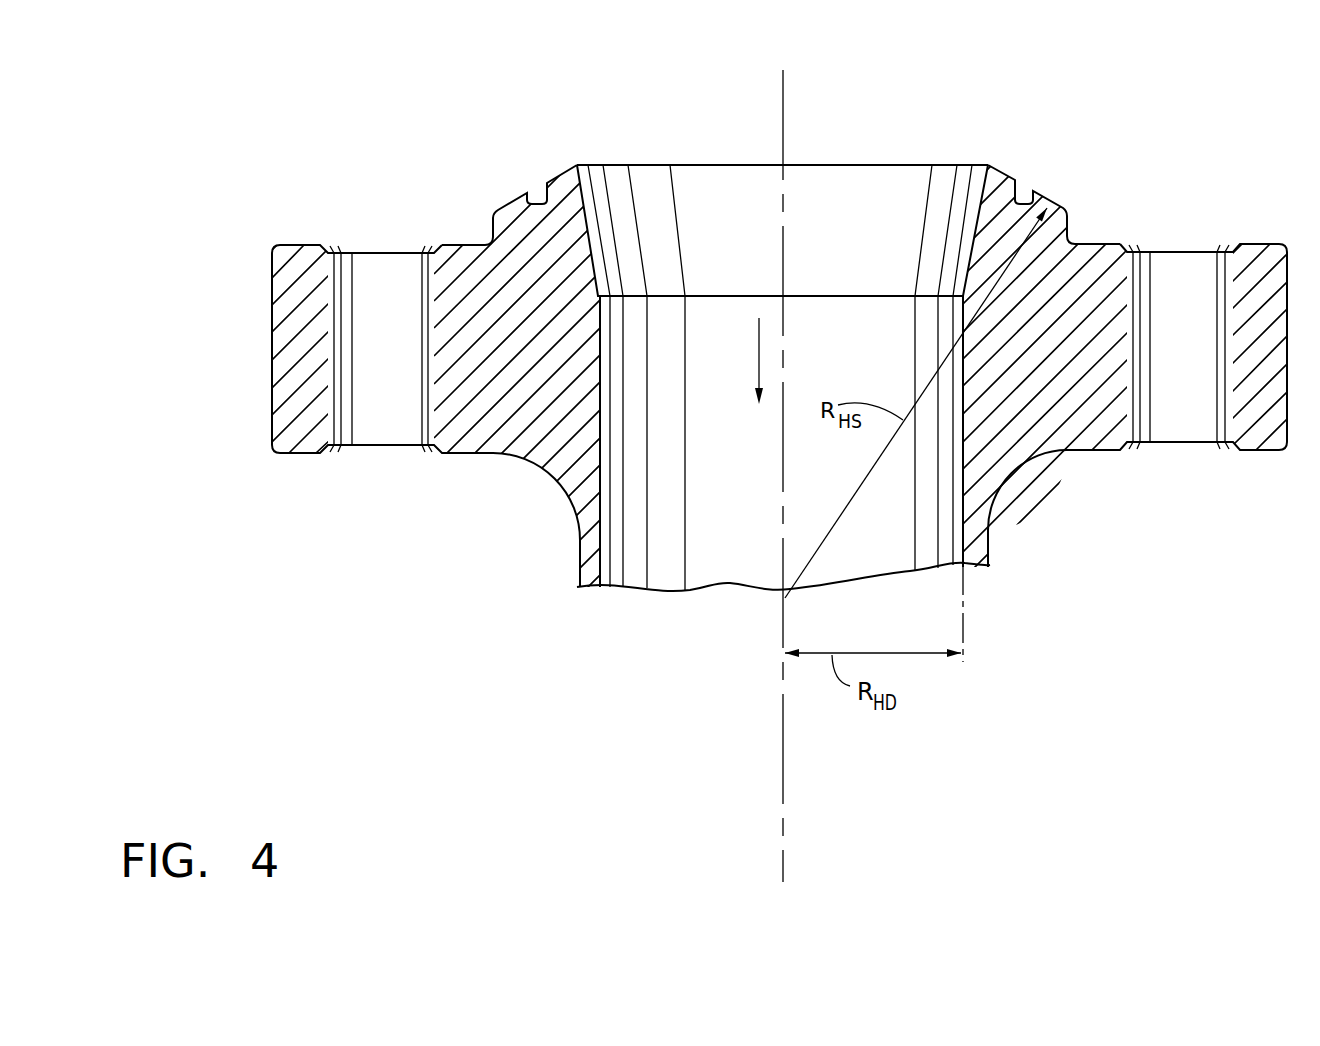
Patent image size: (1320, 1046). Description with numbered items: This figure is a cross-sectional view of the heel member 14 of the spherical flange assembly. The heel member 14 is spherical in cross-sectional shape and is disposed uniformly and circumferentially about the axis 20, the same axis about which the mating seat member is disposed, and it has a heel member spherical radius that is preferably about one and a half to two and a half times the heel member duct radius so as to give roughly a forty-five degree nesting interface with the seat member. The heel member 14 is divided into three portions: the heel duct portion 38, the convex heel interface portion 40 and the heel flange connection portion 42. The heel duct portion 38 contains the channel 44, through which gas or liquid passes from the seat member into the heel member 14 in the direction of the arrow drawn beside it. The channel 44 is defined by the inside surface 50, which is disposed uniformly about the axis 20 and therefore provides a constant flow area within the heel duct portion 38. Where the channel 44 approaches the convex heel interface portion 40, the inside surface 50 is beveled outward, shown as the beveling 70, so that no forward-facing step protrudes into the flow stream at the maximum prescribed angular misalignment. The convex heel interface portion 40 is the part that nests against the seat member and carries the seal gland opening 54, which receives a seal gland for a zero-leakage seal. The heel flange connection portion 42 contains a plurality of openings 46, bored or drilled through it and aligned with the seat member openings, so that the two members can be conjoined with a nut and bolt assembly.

The heel member 14 is at (1024, 488).
The axis 20 is at (784, 105).
The heel duct portion 38 is at (600, 498).
The convex heel interface portion 40 is at (1050, 206).
The heel flange connection portion 42 is at (272, 375).
The channel 44 is at (738, 423).
The openings 46 is at (395, 418).
The inside surface 50 is at (962, 517).
The seal gland opening 54 is at (536, 184).
The beveling 70 is at (588, 228).